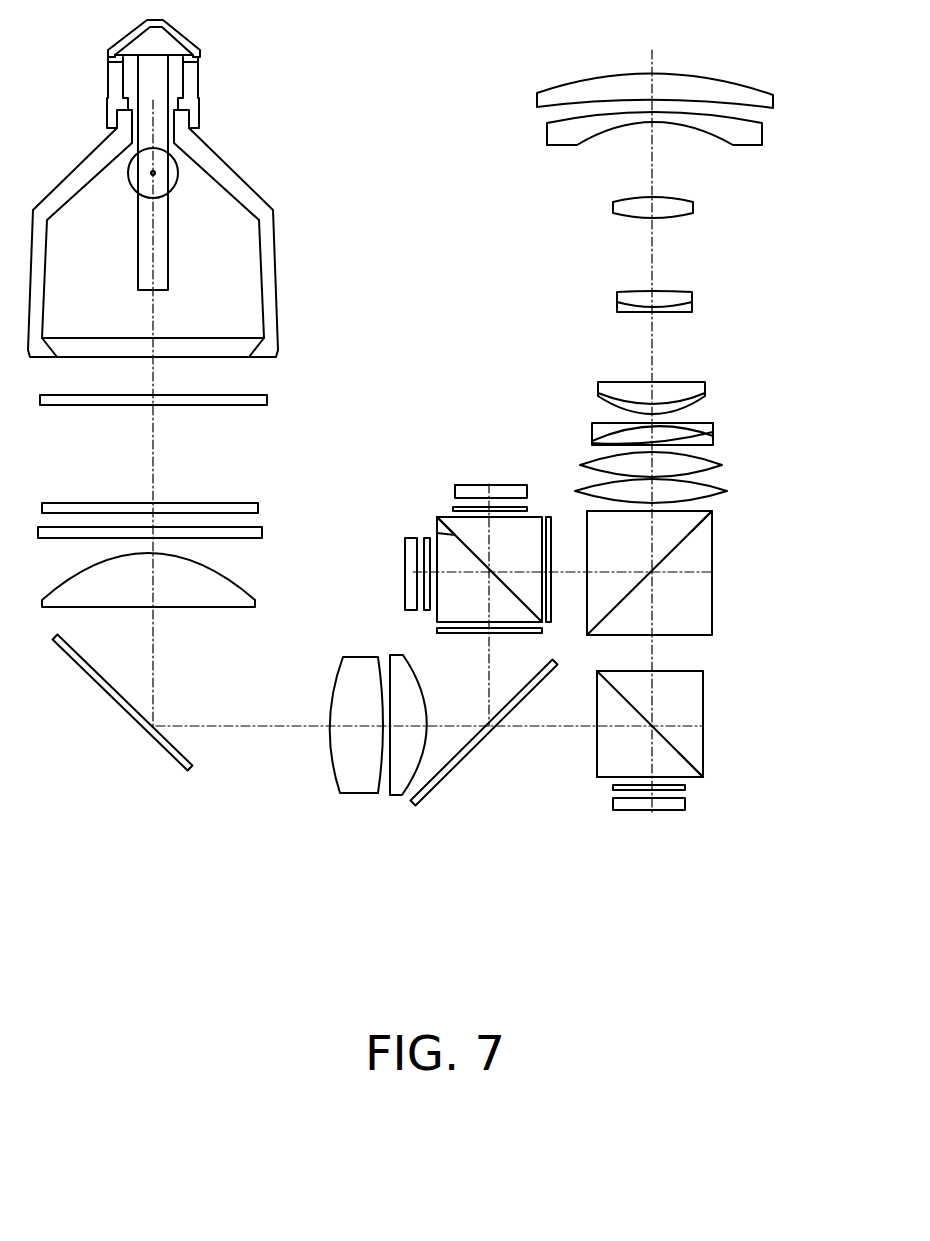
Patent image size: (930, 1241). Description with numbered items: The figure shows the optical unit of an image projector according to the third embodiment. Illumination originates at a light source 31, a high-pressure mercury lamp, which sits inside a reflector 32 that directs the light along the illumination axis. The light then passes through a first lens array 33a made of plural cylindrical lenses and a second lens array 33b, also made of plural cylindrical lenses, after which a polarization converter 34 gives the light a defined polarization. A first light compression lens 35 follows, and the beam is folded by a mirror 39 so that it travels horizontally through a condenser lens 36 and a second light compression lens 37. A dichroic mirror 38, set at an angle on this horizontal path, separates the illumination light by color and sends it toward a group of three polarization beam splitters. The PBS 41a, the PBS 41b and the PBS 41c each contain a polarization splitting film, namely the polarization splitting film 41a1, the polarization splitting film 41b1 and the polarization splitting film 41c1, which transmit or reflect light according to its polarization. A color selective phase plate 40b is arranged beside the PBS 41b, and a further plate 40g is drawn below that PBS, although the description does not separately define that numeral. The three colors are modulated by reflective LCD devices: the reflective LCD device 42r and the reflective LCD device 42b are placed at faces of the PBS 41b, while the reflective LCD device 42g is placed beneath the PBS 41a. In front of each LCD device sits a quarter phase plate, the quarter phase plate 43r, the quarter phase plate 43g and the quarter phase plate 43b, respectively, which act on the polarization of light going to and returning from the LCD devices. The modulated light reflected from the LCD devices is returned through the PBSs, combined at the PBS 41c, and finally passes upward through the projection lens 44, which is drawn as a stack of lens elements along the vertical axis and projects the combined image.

The light source 31 is at (172, 170).
The reflector 32 is at (277, 232).
The first lens array 33a is at (267, 401).
The second lens array 33b is at (258, 509).
The polarization converter 34 is at (262, 532).
The first light compression lens 35 is at (255, 602).
The condenser lens 36 is at (355, 795).
The second light compression lens 37 is at (395, 795).
The dichroic mirror 38 is at (470, 758).
The mirror 39 is at (158, 748).
The color selective phase plate 40b is at (548, 517).
The field lens / plate for green light 40g is at (472, 634).
The PBS 41a is at (703, 760).
The polarization splitting film 41a1 is at (678, 747).
The PBS 41b is at (447, 528).
The polarization splitting film 41b1 is at (437, 530).
The PBS 41c is at (705, 612).
The polarization splitting film 41c1 is at (692, 531).
The reflective LCD device 42b is at (507, 490).
The reflective LCD device 42g is at (660, 805).
The reflective LCD device 42r is at (405, 578).
The quarter phase plate 43b is at (453, 508).
The quarter phase plate 43g is at (685, 787).
The quarter phase plate 43r is at (425, 606).
The projection lens 44 is at (777, 495).